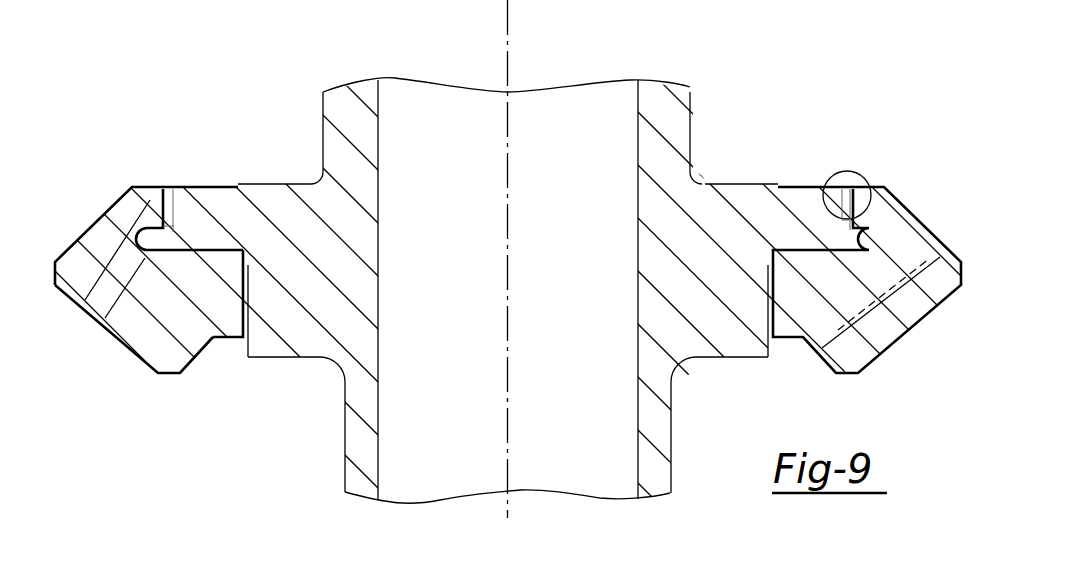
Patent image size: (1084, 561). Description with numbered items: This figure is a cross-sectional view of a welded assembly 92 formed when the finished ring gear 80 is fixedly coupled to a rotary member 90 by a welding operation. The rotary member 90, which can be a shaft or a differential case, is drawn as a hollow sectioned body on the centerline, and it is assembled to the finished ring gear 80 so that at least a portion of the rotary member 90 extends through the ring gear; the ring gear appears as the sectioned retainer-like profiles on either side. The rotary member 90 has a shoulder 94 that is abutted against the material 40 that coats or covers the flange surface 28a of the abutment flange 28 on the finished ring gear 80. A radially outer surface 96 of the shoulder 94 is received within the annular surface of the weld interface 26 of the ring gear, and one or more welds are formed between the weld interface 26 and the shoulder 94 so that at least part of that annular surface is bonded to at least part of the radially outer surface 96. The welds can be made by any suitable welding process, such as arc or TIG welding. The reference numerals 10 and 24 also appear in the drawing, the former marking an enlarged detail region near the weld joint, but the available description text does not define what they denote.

The fastener 10 is at (838, 168).
The retainer clip 24 is at (164, 270).
The weld interface 26 is at (148, 207).
The abutment flange 28 is at (224, 298).
The flange surface 28a is at (208, 257).
The material 40 is at (214, 273).
The finished ring gear 80 is at (122, 327).
The rotary member 90 is at (358, 125).
The welded assembly 92 is at (707, 72).
The shoulder 94 is at (207, 201).
The radially outer surface 96 is at (174, 220).